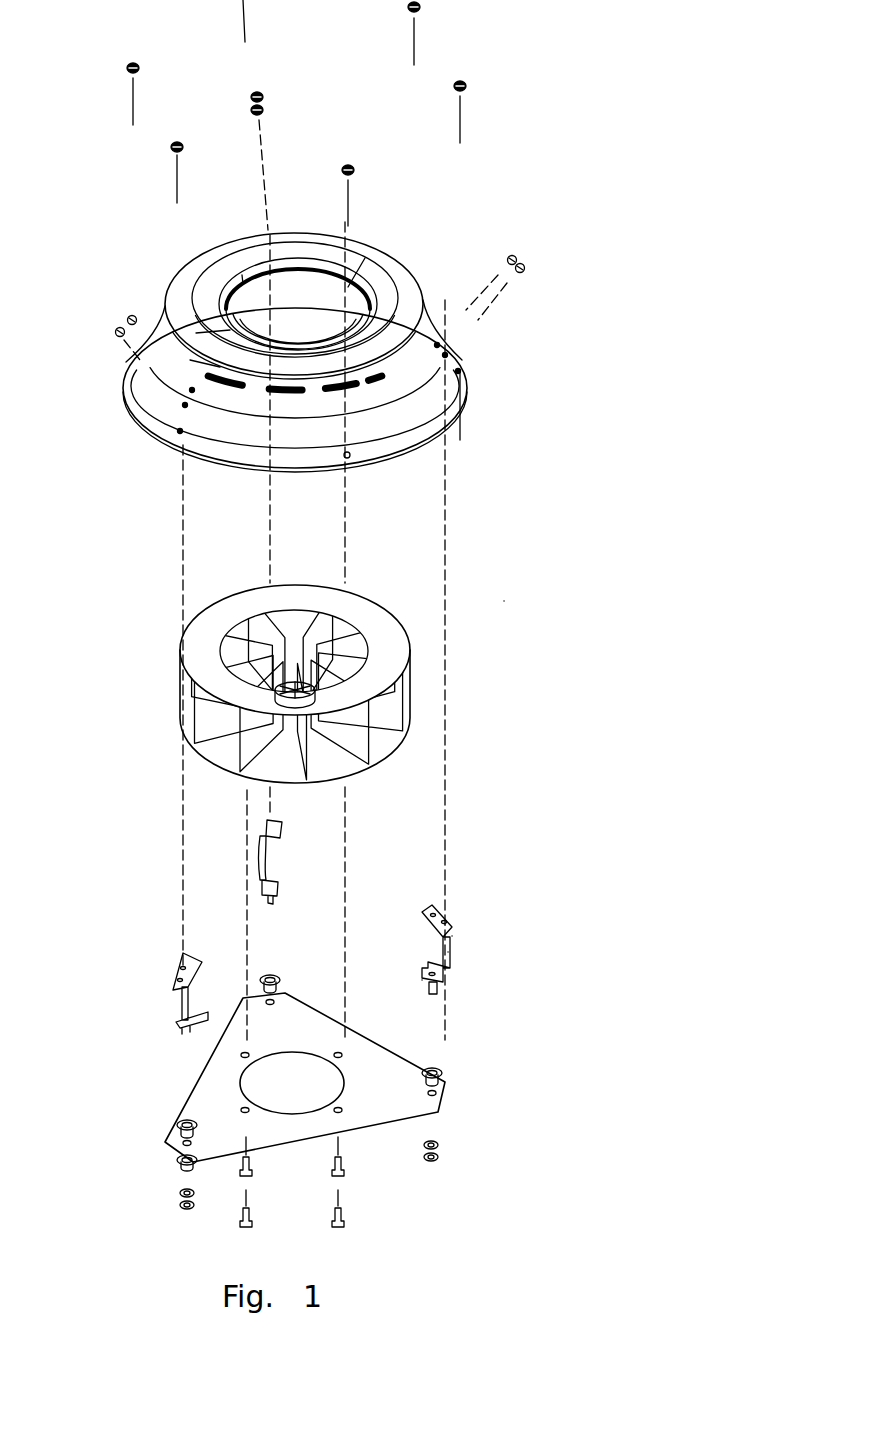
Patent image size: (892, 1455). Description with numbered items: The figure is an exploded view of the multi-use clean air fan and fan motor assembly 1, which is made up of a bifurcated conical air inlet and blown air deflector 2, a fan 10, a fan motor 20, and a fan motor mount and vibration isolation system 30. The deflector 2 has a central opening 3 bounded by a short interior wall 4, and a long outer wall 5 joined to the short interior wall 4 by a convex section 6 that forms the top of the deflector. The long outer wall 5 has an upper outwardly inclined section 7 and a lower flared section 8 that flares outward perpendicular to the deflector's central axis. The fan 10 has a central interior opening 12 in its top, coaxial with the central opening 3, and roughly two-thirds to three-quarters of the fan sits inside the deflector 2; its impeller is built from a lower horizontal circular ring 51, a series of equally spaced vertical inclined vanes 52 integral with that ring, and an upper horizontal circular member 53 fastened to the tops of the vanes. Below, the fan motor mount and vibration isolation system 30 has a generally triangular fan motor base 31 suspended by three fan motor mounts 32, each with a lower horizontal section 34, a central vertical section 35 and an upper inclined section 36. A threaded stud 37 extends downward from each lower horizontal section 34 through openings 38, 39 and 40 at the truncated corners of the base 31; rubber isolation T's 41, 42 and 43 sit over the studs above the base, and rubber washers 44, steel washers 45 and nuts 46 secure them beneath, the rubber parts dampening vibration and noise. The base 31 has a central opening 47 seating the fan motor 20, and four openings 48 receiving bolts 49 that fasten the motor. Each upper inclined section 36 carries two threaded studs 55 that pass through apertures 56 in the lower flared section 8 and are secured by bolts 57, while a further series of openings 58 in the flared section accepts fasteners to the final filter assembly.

The multi-use clean air fan and fan motor assembly 1 is at (513, 593).
The bifurcated conical air inlet and blown air deflector 2 is at (409, 247).
The central opening 3 is at (283, 332).
The short interior wall 4 is at (218, 307).
The long outer wall 5 is at (350, 402).
The convex section 6 is at (185, 315).
The upper outwardly inclined section 7 is at (457, 327).
The lower flared section 8 is at (410, 430).
The fan 10 is at (390, 638).
The central interior opening 12 is at (292, 682).
The fan motor 20 is at (312, 683).
The fan motor mount and vibration isolation system 30 is at (534, 1166).
The generally triangular fan motor base 31 is at (367, 1055).
The fan motor mount 32 is at (262, 853).
The lower horizontal section 34 is at (422, 980).
The central vertical section 35 is at (448, 952).
The upper inclined section 36 is at (452, 936).
The threaded stud 37 is at (437, 988).
The opening 38 is at (440, 1096).
The opening 39 is at (182, 1142).
The opening 40 is at (283, 993).
The rubber isolation T 41 is at (441, 1075).
The rubber isolation T 42 is at (180, 1127).
The rubber isolation T 43 is at (265, 987).
The rubber washer 44 is at (178, 1160).
The steel washer 45 is at (180, 1193).
The nut 46 is at (187, 1207).
The opening 47 is at (266, 1085).
The openings 48 is at (341, 1058).
The bolts 49 is at (338, 1225).
The lower horizontal circular ring 51 is at (385, 738).
The vertical inclined vanes 52 is at (235, 740).
The upper horizontal circular member 53 is at (208, 620).
The threaded studs 55 is at (445, 925).
The apertures 56 is at (192, 390).
The bolts 57 is at (117, 317).
The openings 58 is at (178, 430).